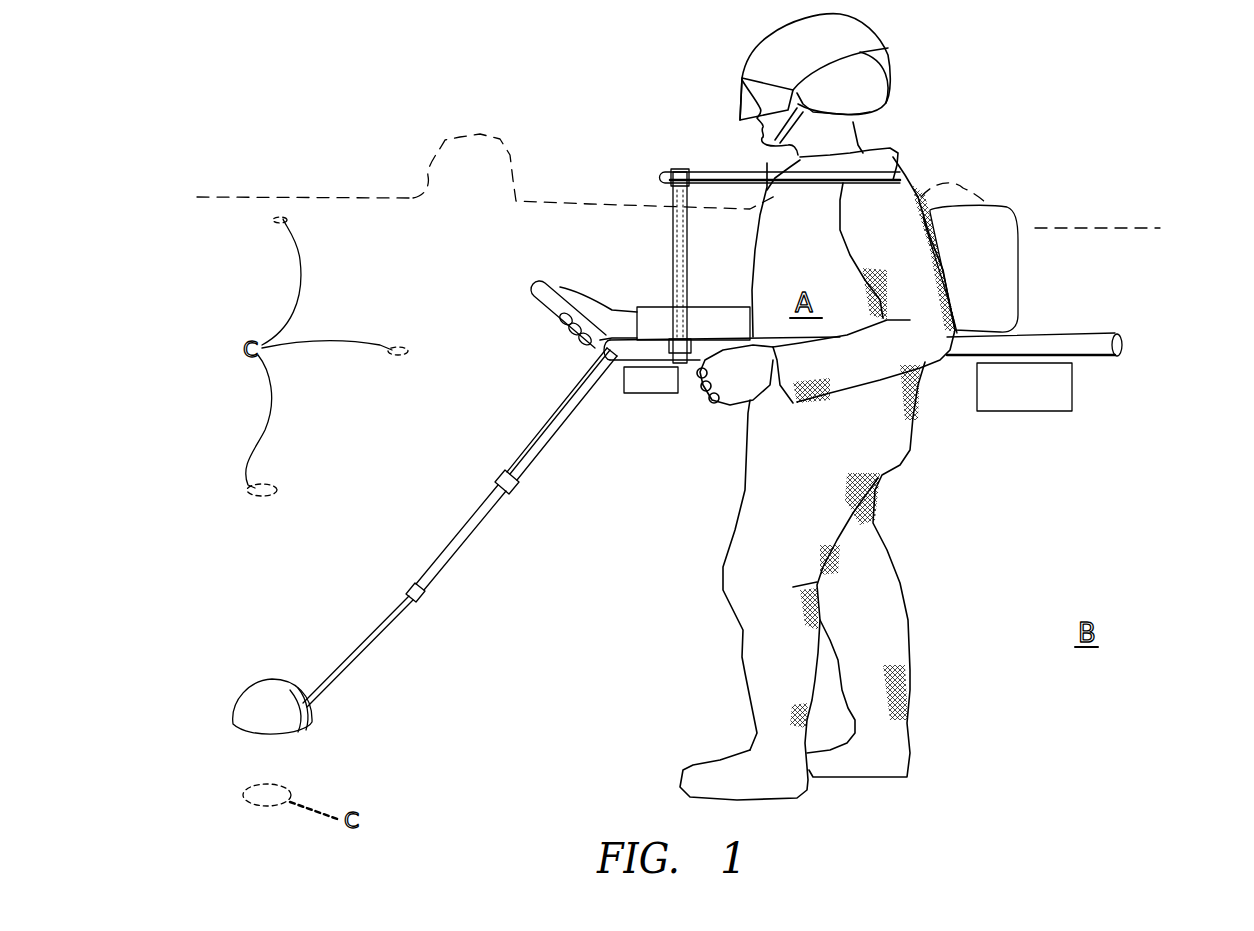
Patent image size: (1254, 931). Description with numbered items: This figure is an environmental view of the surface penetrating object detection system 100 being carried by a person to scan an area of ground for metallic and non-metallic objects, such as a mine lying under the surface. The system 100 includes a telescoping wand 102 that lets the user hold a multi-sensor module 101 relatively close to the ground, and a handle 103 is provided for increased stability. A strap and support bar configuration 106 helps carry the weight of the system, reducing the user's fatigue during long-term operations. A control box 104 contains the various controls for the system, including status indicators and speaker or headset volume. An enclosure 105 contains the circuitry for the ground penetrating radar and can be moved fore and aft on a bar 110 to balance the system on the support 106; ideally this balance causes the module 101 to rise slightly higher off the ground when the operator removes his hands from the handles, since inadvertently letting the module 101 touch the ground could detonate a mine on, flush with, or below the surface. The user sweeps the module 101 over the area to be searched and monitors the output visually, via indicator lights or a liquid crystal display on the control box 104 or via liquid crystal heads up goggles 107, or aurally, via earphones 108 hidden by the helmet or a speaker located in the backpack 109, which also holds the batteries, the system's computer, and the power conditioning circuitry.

The surface penetrating object detection system 100 is at (480, 150).
The multi-sensor module 101 is at (313, 727).
The telescoping wand 102 is at (455, 556).
The handle 103 is at (550, 290).
The control box 104 is at (642, 388).
The enclosure 105 is at (1047, 403).
The strap and support bar configuration 106 is at (674, 170).
The liquid crystal heads up goggles 107 is at (885, 50).
The earphones 108 is at (892, 83).
The backpack 109 is at (1000, 273).
The bar 110 is at (1098, 337).